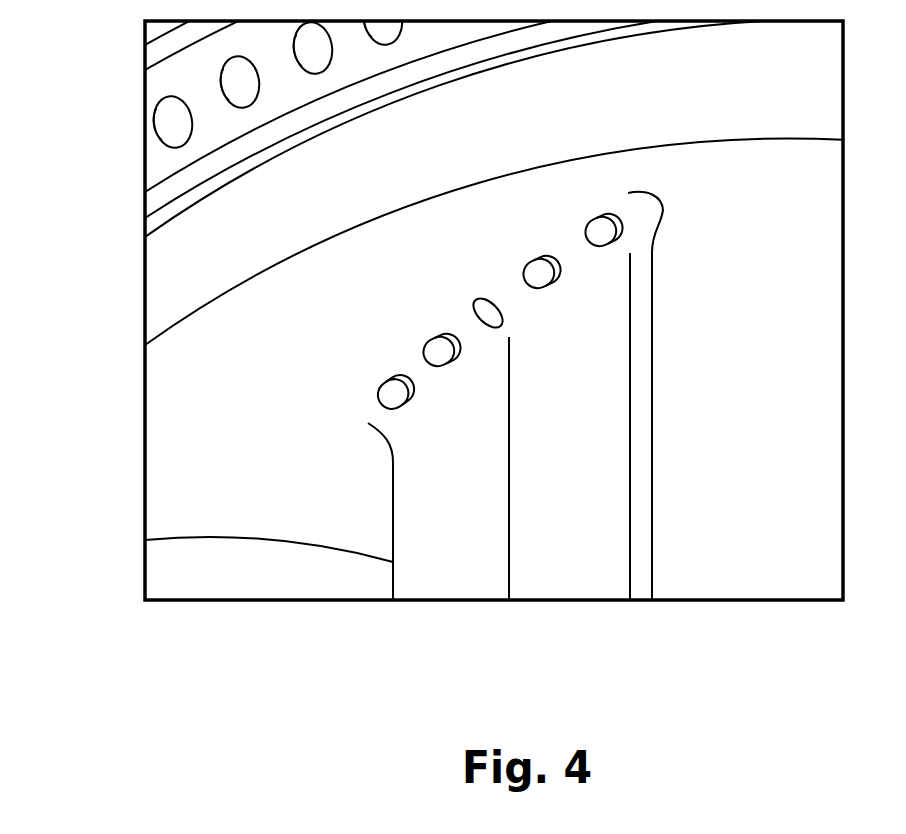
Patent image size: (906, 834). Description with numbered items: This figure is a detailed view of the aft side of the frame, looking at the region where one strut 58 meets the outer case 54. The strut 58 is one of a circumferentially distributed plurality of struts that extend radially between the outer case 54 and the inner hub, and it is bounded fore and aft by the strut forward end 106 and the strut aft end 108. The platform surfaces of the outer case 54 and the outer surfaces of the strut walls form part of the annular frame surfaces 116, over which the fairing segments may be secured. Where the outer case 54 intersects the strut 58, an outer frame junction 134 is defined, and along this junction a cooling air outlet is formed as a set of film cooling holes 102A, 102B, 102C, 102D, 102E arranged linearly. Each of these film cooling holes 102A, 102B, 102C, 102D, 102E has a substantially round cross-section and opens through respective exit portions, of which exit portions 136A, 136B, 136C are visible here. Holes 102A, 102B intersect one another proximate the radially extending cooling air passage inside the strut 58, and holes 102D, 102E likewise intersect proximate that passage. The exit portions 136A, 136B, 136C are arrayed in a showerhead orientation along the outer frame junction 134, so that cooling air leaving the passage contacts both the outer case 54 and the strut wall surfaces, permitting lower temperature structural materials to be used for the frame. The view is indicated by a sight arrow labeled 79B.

The outer case 54 is at (190, 247).
The strut 58 is at (566, 615).
The cooling holes 79B is at (133, 161).
The film cooling hole 102A is at (394, 393).
The film cooling hole 102B is at (442, 345).
The film cooling hole 102C is at (490, 315).
The film cooling hole 102D is at (540, 268).
The film cooling hole 102E is at (609, 222).
The strut forward end 106 is at (382, 586).
The strut aft end 108 is at (642, 575).
The annular frame surface 116 is at (779, 278).
The outer frame junction 134 is at (400, 352).
The exit portion 136A is at (417, 583).
The exit portion 136B is at (499, 605).
The exit portion 136C is at (608, 588).